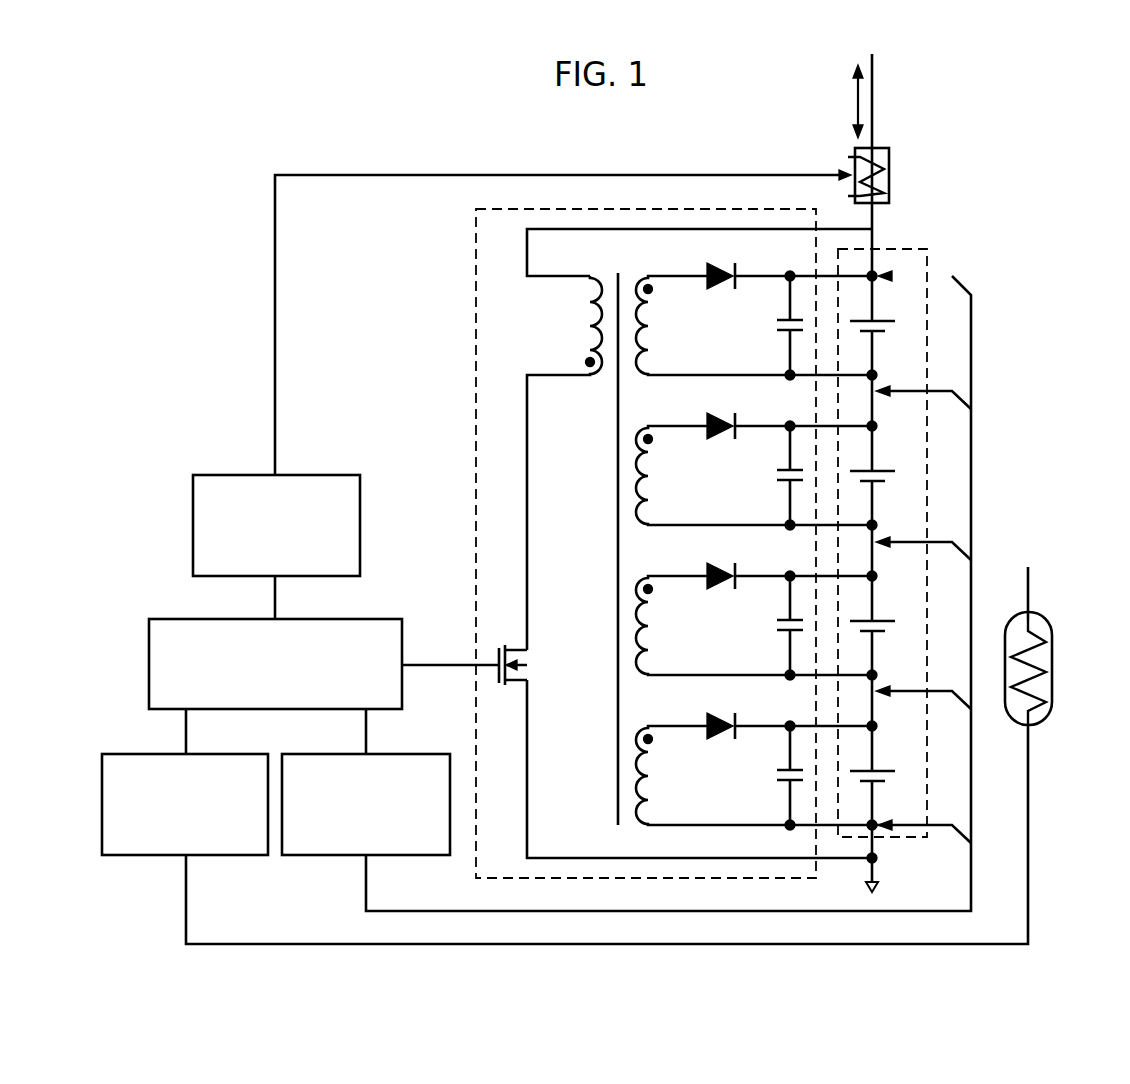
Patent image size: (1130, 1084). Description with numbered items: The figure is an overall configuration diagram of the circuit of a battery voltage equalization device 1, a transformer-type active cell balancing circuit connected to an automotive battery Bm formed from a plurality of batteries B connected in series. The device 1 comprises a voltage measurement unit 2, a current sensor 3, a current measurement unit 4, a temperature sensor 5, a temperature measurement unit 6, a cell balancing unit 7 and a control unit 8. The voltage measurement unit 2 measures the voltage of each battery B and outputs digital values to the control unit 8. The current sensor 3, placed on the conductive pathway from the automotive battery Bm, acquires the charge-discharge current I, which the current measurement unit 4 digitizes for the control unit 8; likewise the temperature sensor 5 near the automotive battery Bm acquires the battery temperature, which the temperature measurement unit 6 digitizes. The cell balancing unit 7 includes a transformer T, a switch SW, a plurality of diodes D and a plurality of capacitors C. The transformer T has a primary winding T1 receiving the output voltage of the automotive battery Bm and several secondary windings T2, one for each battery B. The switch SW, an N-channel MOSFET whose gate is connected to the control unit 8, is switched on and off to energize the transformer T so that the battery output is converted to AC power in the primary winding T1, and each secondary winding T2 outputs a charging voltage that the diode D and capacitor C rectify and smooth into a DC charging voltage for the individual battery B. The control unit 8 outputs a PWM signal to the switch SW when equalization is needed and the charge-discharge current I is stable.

The battery voltage equalization device 1 is at (171, 214).
The voltage measurement unit 2 is at (312, 855).
The current sensor 3 is at (891, 172).
The current measurement unit 4 is at (222, 475).
The temperature sensor 5 is at (1054, 656).
The temperature measurement unit 6 is at (130, 855).
The cell balancing unit 7 is at (476, 238).
The control unit 8 is at (173, 619).
The automotive battery Bm is at (930, 258).
The battery B is at (884, 550).
The capacitor C is at (779, 550).
The diode D is at (748, 514).
The transformer T is at (658, 537).
The primary winding T1 is at (564, 463).
The secondary winding T2 is at (713, 550).
The switch SW is at (484, 665).
The charge-discharge current I is at (851, 101).